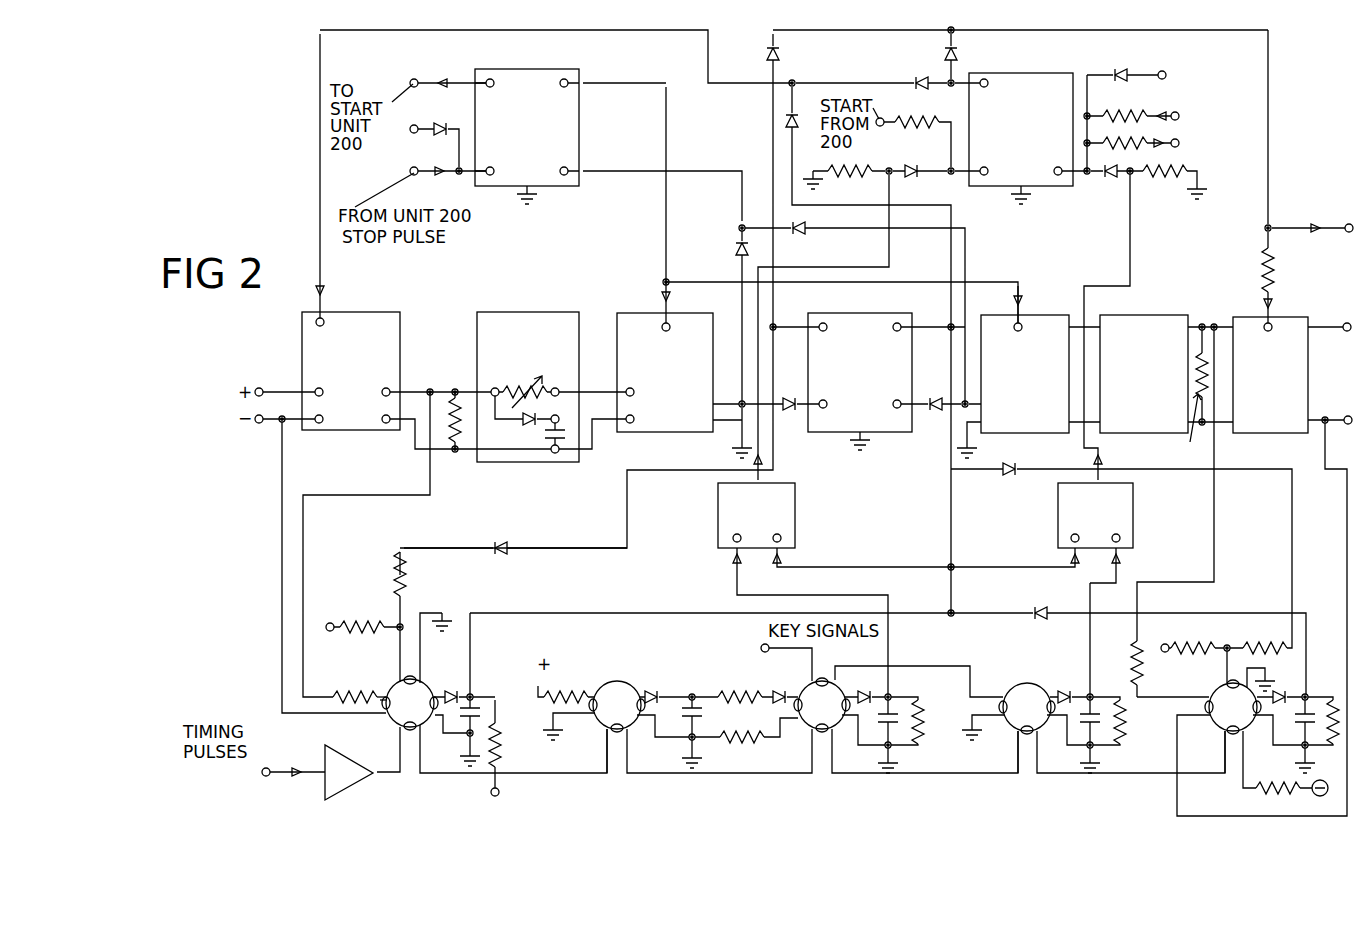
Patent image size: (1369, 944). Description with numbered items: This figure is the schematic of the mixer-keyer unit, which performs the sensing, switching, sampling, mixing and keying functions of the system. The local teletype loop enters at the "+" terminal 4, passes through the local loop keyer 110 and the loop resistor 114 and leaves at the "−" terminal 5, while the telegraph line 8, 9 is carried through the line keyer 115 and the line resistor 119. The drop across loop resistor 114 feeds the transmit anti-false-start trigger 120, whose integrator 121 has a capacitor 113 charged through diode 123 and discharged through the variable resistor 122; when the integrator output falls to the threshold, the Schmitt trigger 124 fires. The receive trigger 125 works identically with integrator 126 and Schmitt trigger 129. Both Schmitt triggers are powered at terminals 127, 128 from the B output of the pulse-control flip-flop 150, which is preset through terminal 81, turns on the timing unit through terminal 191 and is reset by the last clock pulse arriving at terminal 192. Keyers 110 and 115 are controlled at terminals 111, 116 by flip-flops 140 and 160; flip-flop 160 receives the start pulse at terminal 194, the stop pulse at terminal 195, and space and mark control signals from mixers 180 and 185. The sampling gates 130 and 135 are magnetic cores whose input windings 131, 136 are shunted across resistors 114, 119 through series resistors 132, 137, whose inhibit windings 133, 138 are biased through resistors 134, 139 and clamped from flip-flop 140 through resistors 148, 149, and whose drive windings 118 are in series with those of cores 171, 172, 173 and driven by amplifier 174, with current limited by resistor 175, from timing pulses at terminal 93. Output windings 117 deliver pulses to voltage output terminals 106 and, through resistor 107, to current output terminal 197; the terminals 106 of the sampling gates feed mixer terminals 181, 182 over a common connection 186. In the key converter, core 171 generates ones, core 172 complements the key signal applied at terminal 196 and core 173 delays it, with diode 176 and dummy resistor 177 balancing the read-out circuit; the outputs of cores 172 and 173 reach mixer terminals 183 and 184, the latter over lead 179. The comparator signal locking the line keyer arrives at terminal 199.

The "+" terminal 4 is at (281, 377).
The "−" terminal 5 is at (259, 424).
The telegraph-line circuit 8 is at (1346, 323).
The telegraph-line circuit 9 is at (1345, 417).
The terminal 81 is at (416, 125).
The timing pulse input terminal 93 is at (262, 776).
The voltage output terminal 106 is at (472, 694).
The resistor 107 is at (508, 760).
The local loop keyer 110 is at (351, 371).
The control terminal 111 is at (323, 319).
The capacitor 113 is at (564, 443).
The loop resistor 114 is at (452, 441).
The line keyer 115 is at (1270, 375).
The control terminal 116 is at (1266, 322).
The output winding 117 is at (445, 692).
The drive winding 118 is at (398, 726).
The line-resistor 119 is at (1188, 393).
The transmit anti-false-start trigger 120 is at (588, 297).
The integrator 121 is at (518, 311).
The variable resistor 122 is at (505, 389).
The diode 123 is at (531, 425).
The Schmitt trigger 124 is at (665, 372).
The receive anti-false-start trigger circuit 125 is at (1077, 308).
The integrator 126 is at (1144, 374).
The power input terminal 127 is at (668, 324).
The power input terminal 128 is at (1022, 320).
The Schmitt trigger 129 is at (1024, 374).
The sampling gate 130 is at (410, 703).
The input winding 131 is at (390, 694).
The series resistor 132 is at (347, 692).
The inhibit winding 133 is at (397, 682).
The current limiting resistor 134 is at (375, 623).
The sampling gate 135 is at (1233, 707).
The input winding 136 is at (1217, 696).
The series resistor 137 is at (1132, 648).
The inhibit winding 138 is at (1225, 683).
The current limiting resistor 139 is at (1185, 641).
The flip-flop 140 is at (860, 381).
The current limiting resistor 148 is at (1179, 146).
The current limiting resistor 149 is at (1257, 641).
The pulse-control flip-flop 150 is at (527, 136).
The flip-flop 160 is at (1021, 138).
The core 171 is at (617, 706).
The core 172 is at (822, 705).
The core 173 is at (1027, 708).
The driving-amplifier 174 is at (351, 787).
The resistor 175 is at (1265, 792).
The diode 176 is at (780, 690).
The dummy resistor 177 is at (731, 731).
The lead 179 is at (1089, 583).
The mixer 180 is at (787, 497).
The mixer input terminal 181 is at (1071, 538).
The mixer input terminal 182 is at (781, 538).
The input terminal 183 is at (733, 538).
The input terminal 184 is at (1120, 538).
The mixer 185 is at (1058, 497).
The junction line 186 is at (953, 619).
The terminal 191 is at (417, 79).
The terminal 192 is at (418, 176).
The terminal 194 is at (884, 127).
The terminal 195 is at (1179, 113).
The terminal 196 is at (762, 647).
The current output terminal 197 is at (499, 793).
The terminal 199 is at (1345, 224).